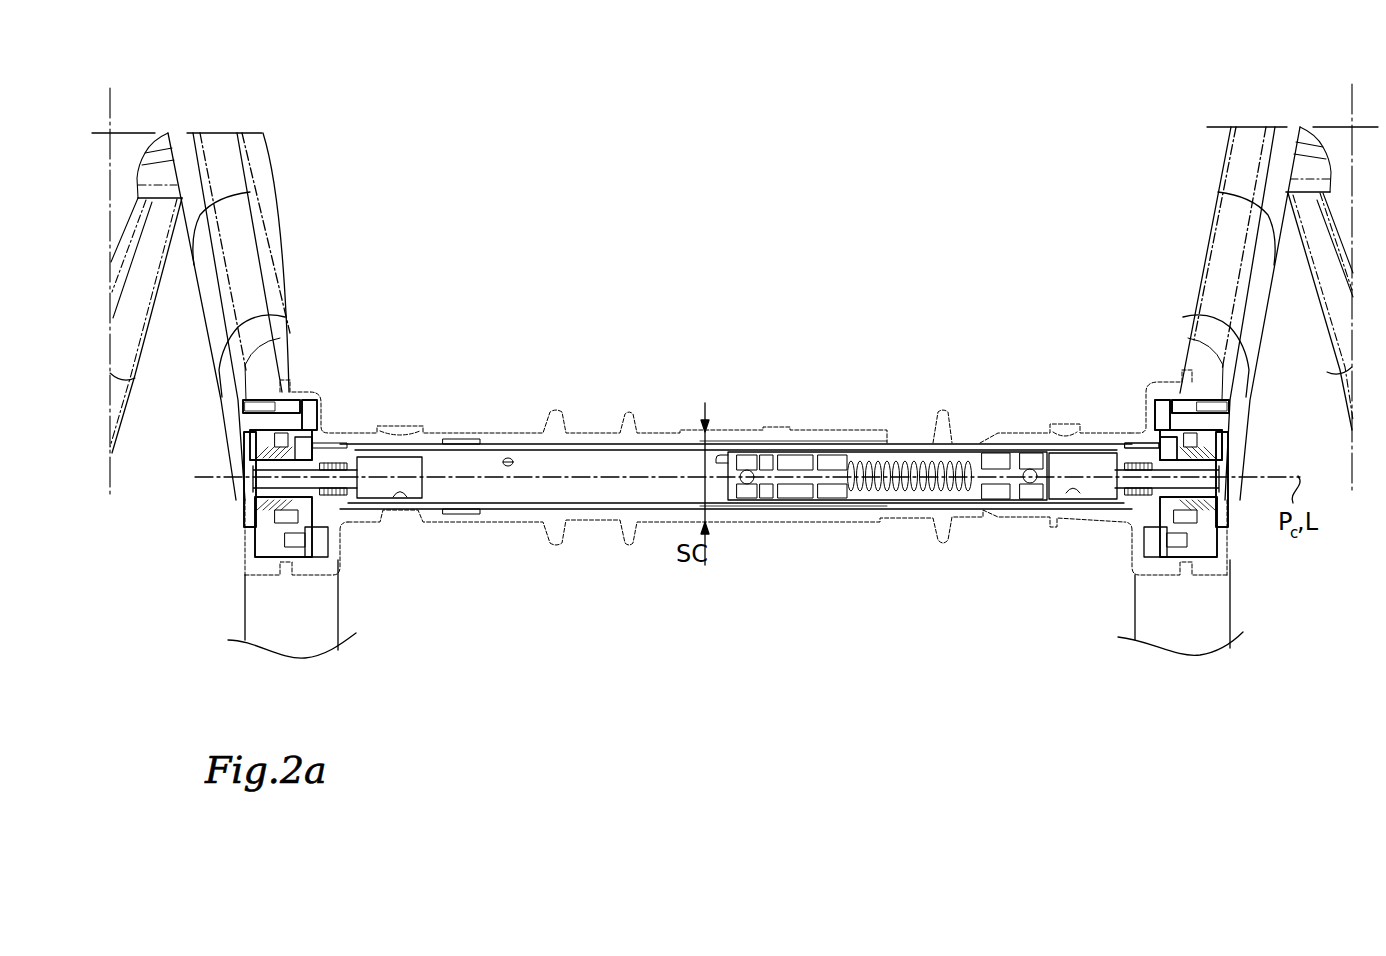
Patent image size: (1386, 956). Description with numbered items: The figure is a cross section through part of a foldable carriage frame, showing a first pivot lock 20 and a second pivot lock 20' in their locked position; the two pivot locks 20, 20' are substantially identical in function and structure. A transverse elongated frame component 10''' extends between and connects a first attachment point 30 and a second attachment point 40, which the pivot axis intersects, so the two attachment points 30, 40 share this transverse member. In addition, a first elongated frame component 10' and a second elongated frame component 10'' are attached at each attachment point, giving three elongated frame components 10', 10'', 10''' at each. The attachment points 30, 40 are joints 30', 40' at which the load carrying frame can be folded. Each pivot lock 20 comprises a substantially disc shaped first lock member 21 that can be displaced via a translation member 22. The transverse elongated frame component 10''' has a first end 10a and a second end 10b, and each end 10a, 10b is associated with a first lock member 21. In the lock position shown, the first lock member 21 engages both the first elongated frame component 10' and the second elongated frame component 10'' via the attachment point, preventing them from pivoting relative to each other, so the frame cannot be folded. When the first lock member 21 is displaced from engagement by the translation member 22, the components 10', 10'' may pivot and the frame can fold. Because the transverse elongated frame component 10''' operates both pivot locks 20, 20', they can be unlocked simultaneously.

The first elongated frame component 10' is at (734, 313).
The second elongated frame component 10'' is at (735, 609).
The transverse elongated frame component 10''' is at (736, 460).
The first end 10a is at (1102, 503).
The second end 10b is at (373, 505).
The first pivot lock 20 is at (1172, 435).
The second pivot lock 20' is at (308, 451).
The first lock member 21 is at (1182, 424).
The translation member 22 is at (1162, 438).
The first attachment point 30 is at (1141, 447).
The joint 30' is at (1141, 447).
The second attachment point 40 is at (342, 467).
The joint 40' is at (342, 467).